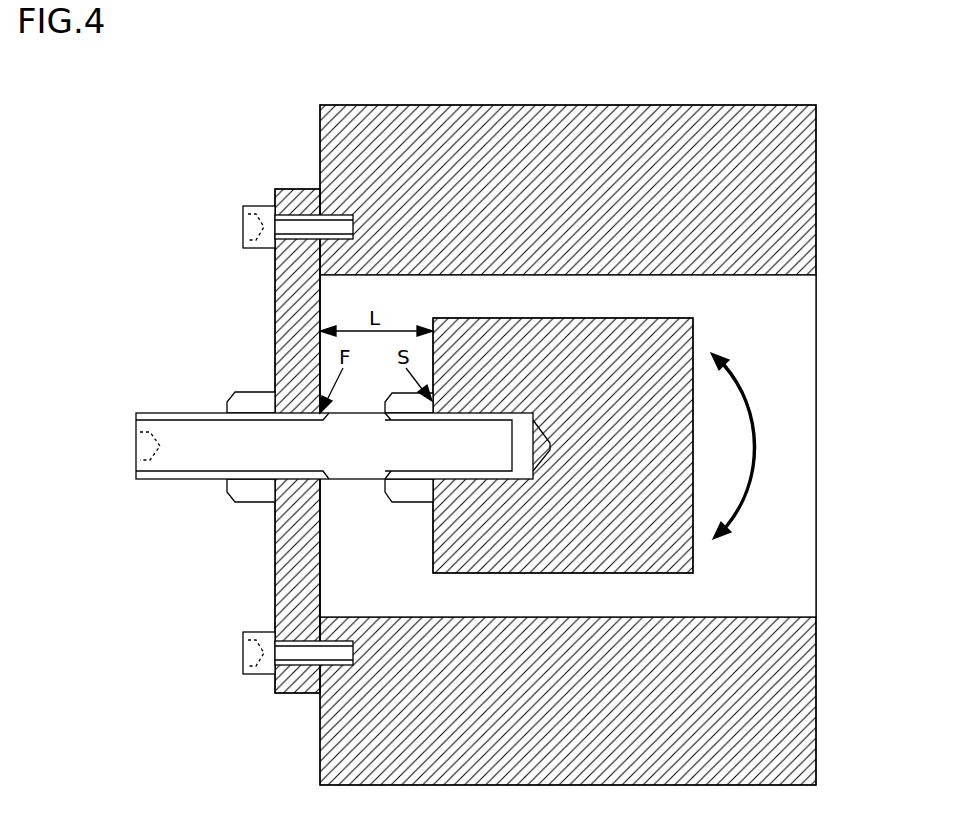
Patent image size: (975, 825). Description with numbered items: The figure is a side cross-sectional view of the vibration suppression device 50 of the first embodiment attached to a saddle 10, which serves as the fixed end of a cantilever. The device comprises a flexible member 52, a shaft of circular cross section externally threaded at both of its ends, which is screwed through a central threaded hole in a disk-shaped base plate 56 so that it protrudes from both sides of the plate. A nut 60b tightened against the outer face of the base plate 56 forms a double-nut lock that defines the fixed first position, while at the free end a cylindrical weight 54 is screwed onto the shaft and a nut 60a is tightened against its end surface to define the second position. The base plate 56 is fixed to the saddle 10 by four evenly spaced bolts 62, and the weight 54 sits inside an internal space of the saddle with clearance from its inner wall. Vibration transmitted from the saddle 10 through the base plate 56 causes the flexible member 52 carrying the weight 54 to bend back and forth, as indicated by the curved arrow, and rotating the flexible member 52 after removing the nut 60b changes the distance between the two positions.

The saddle 10 is at (777, 218).
The vibration suppression device 50 is at (343, 475).
The flexible member 52 is at (348, 462).
The weight 54 is at (661, 568).
The base plate 56 is at (292, 294).
The nut 60a is at (410, 494).
The nut 60b is at (250, 492).
The bolts 62 is at (268, 250).